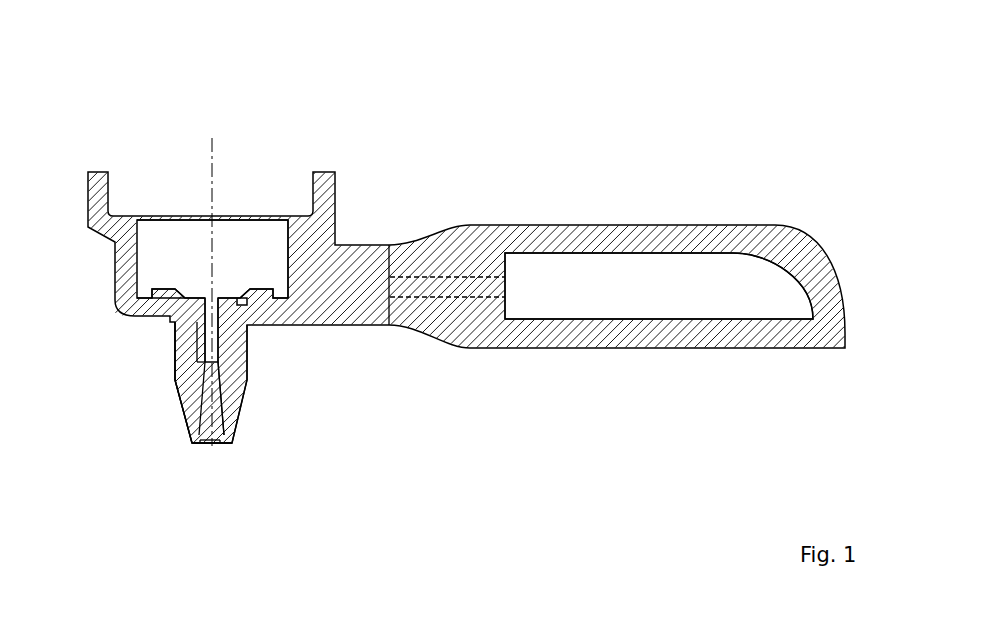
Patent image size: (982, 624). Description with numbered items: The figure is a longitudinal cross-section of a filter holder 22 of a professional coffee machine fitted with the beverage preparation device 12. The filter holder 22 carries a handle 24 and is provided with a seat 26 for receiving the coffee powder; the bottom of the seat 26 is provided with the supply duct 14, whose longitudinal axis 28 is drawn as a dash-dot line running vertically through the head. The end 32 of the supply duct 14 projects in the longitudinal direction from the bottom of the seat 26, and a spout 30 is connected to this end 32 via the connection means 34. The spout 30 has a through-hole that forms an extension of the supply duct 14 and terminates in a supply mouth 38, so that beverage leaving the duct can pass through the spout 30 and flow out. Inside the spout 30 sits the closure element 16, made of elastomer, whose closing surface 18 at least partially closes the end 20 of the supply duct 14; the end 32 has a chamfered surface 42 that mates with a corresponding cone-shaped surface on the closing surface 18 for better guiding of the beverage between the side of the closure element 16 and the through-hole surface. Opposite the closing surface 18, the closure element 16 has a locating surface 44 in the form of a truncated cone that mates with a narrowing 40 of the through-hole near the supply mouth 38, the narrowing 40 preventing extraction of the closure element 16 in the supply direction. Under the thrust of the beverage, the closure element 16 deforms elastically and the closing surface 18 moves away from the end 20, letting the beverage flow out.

The device 12 is at (163, 398).
The supply duct 14 is at (222, 345).
The closure element 16 is at (222, 400).
The closing surface 18 is at (177, 360).
The end of the supply duct 20 is at (220, 368).
The filter holder 22 is at (463, 190).
The handle 24 is at (575, 226).
The seat 26 is at (172, 250).
The longitudinal axis 28 is at (212, 138).
The spout 30 is at (178, 344).
The end of the supply duct 32 is at (193, 330).
The connection means 34 is at (234, 339).
The supply mouth 38 is at (220, 433).
The narrowing 40 is at (193, 403).
The chamfered surface 42 is at (180, 385).
The locating surface 44 is at (190, 410).